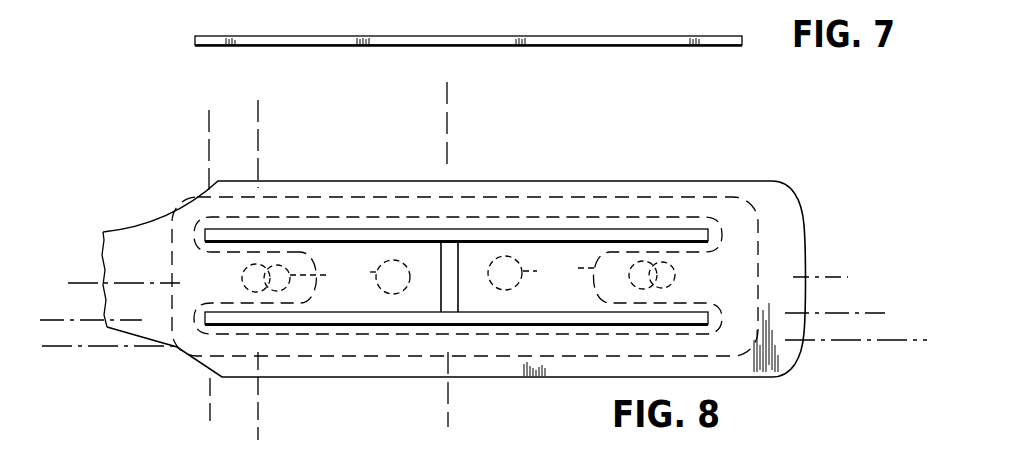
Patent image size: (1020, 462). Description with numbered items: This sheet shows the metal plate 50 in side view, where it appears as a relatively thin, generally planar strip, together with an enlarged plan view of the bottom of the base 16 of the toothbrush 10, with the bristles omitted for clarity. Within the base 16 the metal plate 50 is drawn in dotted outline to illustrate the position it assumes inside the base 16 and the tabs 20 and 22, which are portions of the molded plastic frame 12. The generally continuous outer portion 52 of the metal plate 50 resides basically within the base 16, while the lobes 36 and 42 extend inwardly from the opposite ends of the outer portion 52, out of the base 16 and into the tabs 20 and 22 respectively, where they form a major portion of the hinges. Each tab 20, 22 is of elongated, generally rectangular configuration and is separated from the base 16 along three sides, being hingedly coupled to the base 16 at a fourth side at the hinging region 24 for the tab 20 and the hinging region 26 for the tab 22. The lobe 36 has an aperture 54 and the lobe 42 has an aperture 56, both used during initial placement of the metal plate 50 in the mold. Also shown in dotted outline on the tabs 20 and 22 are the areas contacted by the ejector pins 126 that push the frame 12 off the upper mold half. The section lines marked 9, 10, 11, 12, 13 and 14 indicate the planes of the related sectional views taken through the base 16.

In FIG. 8, the section line 9- 9 is at (28, 330).
In FIG. 8, the toothbrush 10 is at (55, 299).
In FIG. 8, the section line 11- 11 is at (82, 288).
In FIG. 8, the frame 12 is at (475, 137).
In FIG. 8, the section line 13- 13 is at (258, 122).
In FIG. 8, the section line 14- 14 is at (222, 157).
In FIG. 8, the base 16 is at (723, 370).
In FIG. 8, the tab 20 is at (373, 244).
In FIG. 8, the tab 22 is at (568, 245).
In FIG. 8, the hinging region 24 is at (173, 242).
In FIG. 8, the hinging region 26 is at (710, 258).
In FIG. 8, the lobe 36 is at (317, 292).
In FIG. 8, the lobe 42 is at (598, 292).
In FIG. 7, the metal plate 50 is at (621, 47).
In FIG. 8, the metal plate 50 is at (596, 354).
In FIG. 8, the generally continuous outer portion 52 is at (623, 197).
In FIG. 8, the aperture 54 is at (236, 274).
In FIG. 8, the aperture 56 is at (672, 282).
In FIG. 8, the ejector pins 126 is at (458, 275).